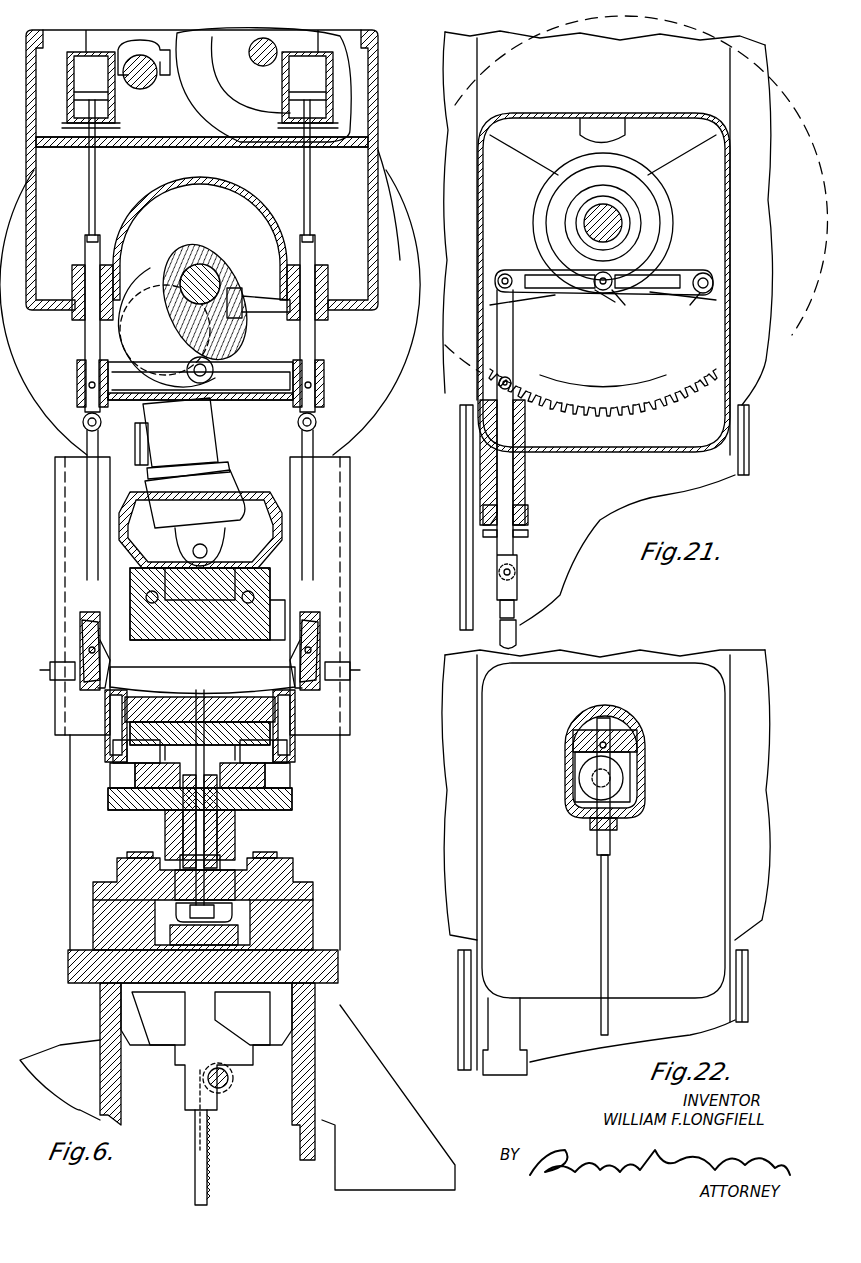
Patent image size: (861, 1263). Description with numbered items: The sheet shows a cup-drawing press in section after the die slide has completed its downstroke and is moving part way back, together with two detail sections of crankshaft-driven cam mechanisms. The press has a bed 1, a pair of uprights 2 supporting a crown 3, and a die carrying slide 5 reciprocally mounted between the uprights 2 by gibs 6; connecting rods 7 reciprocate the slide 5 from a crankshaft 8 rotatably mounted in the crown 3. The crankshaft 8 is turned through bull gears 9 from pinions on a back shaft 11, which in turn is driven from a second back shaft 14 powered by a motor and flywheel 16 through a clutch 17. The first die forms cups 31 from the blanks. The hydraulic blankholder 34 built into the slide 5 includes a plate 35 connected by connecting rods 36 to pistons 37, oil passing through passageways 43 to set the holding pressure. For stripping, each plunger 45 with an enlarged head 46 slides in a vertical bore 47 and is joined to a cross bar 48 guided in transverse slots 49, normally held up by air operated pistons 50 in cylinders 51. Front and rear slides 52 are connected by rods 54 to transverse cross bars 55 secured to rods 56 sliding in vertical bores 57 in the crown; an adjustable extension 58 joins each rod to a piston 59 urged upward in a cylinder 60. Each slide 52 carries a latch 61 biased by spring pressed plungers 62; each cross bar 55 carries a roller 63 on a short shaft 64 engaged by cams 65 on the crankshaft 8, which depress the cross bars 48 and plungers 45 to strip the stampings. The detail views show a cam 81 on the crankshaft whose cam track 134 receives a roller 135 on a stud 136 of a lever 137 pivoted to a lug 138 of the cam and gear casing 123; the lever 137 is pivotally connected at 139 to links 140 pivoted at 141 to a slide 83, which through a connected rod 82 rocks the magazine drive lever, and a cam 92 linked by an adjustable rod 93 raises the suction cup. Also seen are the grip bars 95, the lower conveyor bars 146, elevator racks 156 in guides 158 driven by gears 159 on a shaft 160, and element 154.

In FIG. 6, the bed 1 is at (94, 1068).
In FIG. 6, the uprights 2 is at (70, 835).
In FIG. 21, the uprights 2 is at (684, 494).
In FIG. 22, the uprights 2 is at (728, 1006).
In FIG. 6, the crown 3 is at (376, 158).
In FIG. 6, the die carrying slide 5 is at (275, 708).
In FIG. 6, the gibs 6 is at (55, 497).
In FIG. 21, the gibs 6 is at (460, 550).
In FIG. 22, the gibs 6 is at (458, 1017).
In FIG. 6, the connecting rods 7 is at (204, 424).
In FIG. 6, the crankshaft 8 is at (205, 272).
In FIG. 21, the crankshaft 8 is at (620, 224).
In FIG. 21, the bull gears 9 is at (645, 418).
In FIG. 6, the back shaft 11 is at (140, 55).
In FIG. 6, the second back shaft 14 is at (263, 38).
In FIG. 6, the flywheel 16 is at (212, 120).
In FIG. 6, the clutch 17 is at (268, 97).
In FIG. 6, the cups 31 is at (190, 905).
In FIG. 6, the blankholder 34 is at (158, 834).
In FIG. 6, the plate 35 is at (270, 785).
In FIG. 6, the connecting rods 36 is at (147, 766).
In FIG. 6, the pistons 37 is at (135, 640).
In FIG. 6, the passageways 43 is at (147, 594).
In FIG. 6, the plunger 45 is at (215, 812).
In FIG. 6, the enlarged head 46 is at (208, 905).
In FIG. 6, the vertical bore 47 is at (212, 835).
In FIG. 6, the cross bar 48 is at (202, 682).
In FIG. 6, the transverse slots 49 is at (267, 640).
In FIG. 6, the air operated pistons 50 is at (115, 710).
In FIG. 6, the cylinders 51 is at (115, 757).
In FIG. 6, the slides 52 is at (80, 633).
In FIG. 6, the rods 54 is at (88, 530).
In FIG. 6, the cross bars 55 is at (77, 389).
In FIG. 6, the rods 56 is at (86, 258).
In FIG. 6, the vertical bores 57 is at (75, 328).
In FIG. 6, the adjustable extension 58 is at (88, 188).
In FIG. 6, the piston 59 is at (82, 92).
In FIG. 6, the cylinder 60 is at (76, 116).
In FIG. 6, the latch 61 is at (90, 650).
In FIG. 6, the spring pressed plungers 62 is at (52, 672).
In FIG. 6, the roller 63 is at (214, 372).
In FIG. 6, the short shaft 64 is at (190, 371).
In FIG. 6, the cams 65 is at (232, 318).
In FIG. 21, the cam 81 is at (638, 152).
In FIG. 21, the connected rod 82 is at (517, 636).
In FIG. 21, the slide 83 is at (500, 475).
In FIG. 22, the cam 92 is at (620, 780).
In FIG. 22, the adjustable rod 93 is at (609, 883).
In FIG. 6, the bars 95 is at (130, 853).
In FIG. 6, the cam and gear casing 123 is at (388, 215).
In FIG. 22, the cam and gear casing 123 is at (727, 805).
In FIG. 21, the cam track 134 is at (601, 170).
In FIG. 21, the roller 135 is at (618, 292).
In FIG. 21, the stud 136 is at (603, 292).
In FIG. 21, the lever 137 is at (700, 294).
In FIG. 21, the lug 138 is at (718, 272).
In FIG. 21, the pivotal connection 139 is at (495, 278).
In FIG. 21, the links 140 is at (514, 342).
In FIG. 21, the pivotal connection 141 is at (510, 380).
In FIG. 6, the bars 146 is at (168, 978).
In FIG. 6, the base block 154 is at (232, 908).
In FIG. 6, the racks 156 is at (210, 1158).
In FIG. 6, the guides 158 is at (220, 1028).
In FIG. 6, the gears 159 is at (228, 1092).
In FIG. 6, the shaft 160 is at (230, 1078).